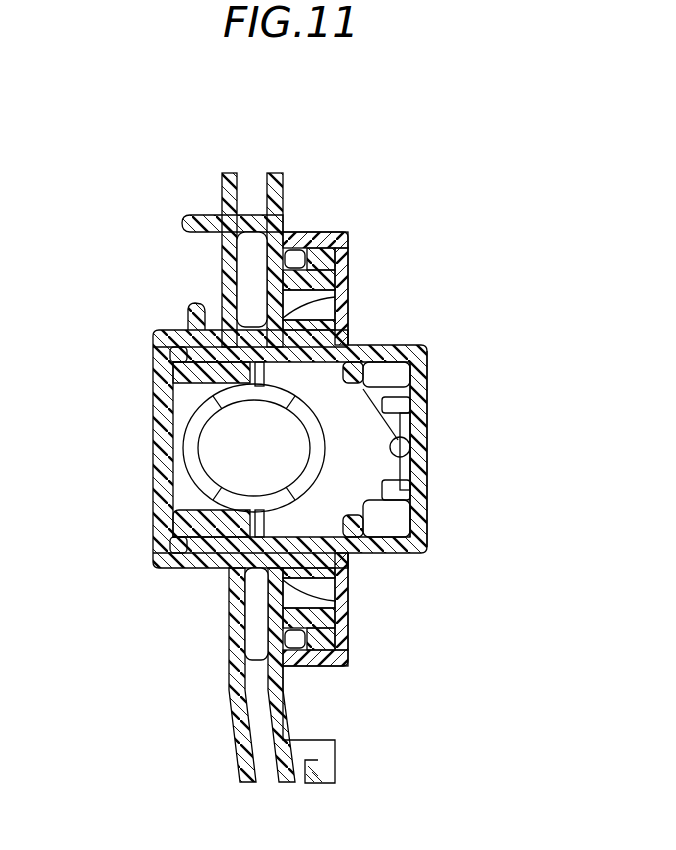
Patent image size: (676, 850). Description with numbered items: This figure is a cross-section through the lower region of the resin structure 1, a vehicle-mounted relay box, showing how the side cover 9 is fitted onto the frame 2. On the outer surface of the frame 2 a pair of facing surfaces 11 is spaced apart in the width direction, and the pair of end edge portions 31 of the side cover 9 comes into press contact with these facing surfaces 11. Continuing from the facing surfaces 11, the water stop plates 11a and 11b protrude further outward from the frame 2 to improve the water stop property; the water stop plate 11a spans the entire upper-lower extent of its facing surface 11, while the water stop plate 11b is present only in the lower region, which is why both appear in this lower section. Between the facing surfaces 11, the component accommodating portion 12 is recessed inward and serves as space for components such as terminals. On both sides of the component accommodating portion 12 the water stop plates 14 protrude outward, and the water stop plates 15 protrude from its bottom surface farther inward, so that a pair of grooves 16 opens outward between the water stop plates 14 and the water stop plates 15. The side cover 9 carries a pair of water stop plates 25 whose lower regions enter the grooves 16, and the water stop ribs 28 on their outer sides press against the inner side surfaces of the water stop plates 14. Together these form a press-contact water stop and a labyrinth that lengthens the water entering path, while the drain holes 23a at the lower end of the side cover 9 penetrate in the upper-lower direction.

The resin structure 1 is at (111, 208).
The frame 2 is at (141, 452).
The side cover 9 is at (438, 438).
The facing surfaces 11 is at (348, 257).
The water stop plate 11a is at (339, 232).
The water stop plate 11b is at (348, 655).
The component accommodating portion 12 is at (185, 462).
The water stop plates 14 is at (187, 314).
The water stop plates 15 is at (172, 386).
The grooves 16 is at (167, 348).
The drain holes 23a is at (393, 519).
The water stop plates 25 is at (335, 300).
The water stop ribs 28 is at (335, 331).
The end edge portions 31 is at (293, 236).